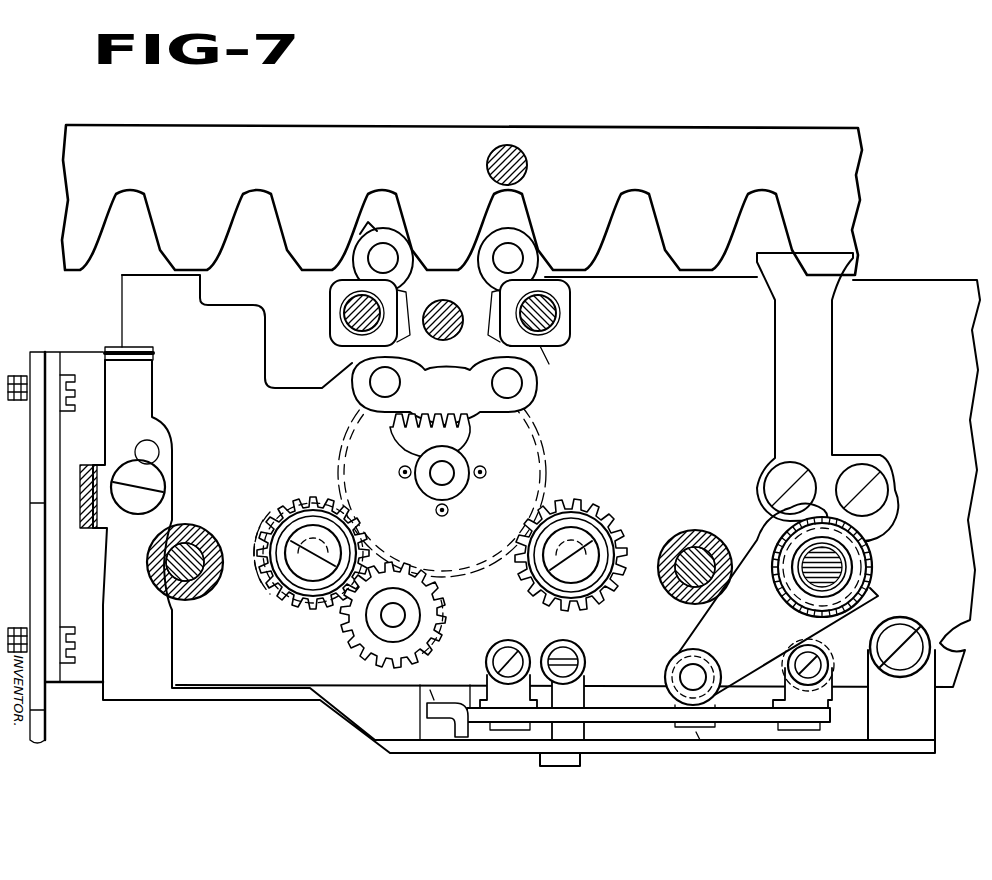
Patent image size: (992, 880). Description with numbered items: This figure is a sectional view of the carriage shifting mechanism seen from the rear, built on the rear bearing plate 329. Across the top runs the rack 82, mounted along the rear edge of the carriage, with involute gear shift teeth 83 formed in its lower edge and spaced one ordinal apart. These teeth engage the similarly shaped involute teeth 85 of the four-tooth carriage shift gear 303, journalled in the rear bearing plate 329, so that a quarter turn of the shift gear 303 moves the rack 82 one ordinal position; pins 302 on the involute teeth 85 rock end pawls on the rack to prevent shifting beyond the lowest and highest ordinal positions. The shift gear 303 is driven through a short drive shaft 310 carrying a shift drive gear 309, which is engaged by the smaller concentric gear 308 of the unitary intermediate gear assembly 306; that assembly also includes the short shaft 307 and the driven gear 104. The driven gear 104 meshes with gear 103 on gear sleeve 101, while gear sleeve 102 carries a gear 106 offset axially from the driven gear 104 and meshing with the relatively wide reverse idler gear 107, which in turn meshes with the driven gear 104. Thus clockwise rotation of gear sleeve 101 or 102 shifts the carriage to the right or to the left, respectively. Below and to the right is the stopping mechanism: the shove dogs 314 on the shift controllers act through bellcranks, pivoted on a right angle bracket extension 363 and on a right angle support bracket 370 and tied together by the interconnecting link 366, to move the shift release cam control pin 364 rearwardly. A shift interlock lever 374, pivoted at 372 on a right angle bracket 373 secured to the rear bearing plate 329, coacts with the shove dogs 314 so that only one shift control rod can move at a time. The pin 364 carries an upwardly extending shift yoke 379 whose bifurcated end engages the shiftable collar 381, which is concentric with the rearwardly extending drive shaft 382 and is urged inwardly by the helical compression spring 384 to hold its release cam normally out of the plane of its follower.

The rack 82 is at (573, 132).
The involute teeth 85 is at (372, 230).
The pins 302 is at (383, 257).
The carriage shift gear 303 is at (419, 240).
The involute gear shift teeth 83 is at (595, 263).
The short drive shaft 310 is at (447, 320).
The shift drive gear 309 is at (457, 399).
The intermediate gear assembly 306 is at (332, 445).
The smaller concentric gear 308 is at (440, 444).
The driven gear 104 is at (517, 498).
The short shaft 307 is at (442, 473).
The gear 106 is at (332, 507).
The gear sleeve 102 is at (300, 563).
The reverse idler gear 107 is at (356, 614).
The gear sleeve 101 is at (600, 547).
The gear 103 is at (582, 507).
The shiftable collar 381 is at (874, 575).
The drive shaft 382 is at (870, 556).
The helical compression spring 384 is at (823, 568).
The shift yoke 379 is at (711, 643).
The shift release cam control pin 364 is at (683, 670).
The right angle support bracket 370 is at (492, 673).
The right angle bracket 373 is at (578, 686).
The right angle bracket extension 363 is at (823, 687).
The interconnecting link 366 is at (606, 712).
The pivot 372 is at (560, 768).
The shift interlock lever 374 is at (452, 724).
The shove dog 314 is at (433, 695).
The rear bearing plate 329 is at (214, 670).